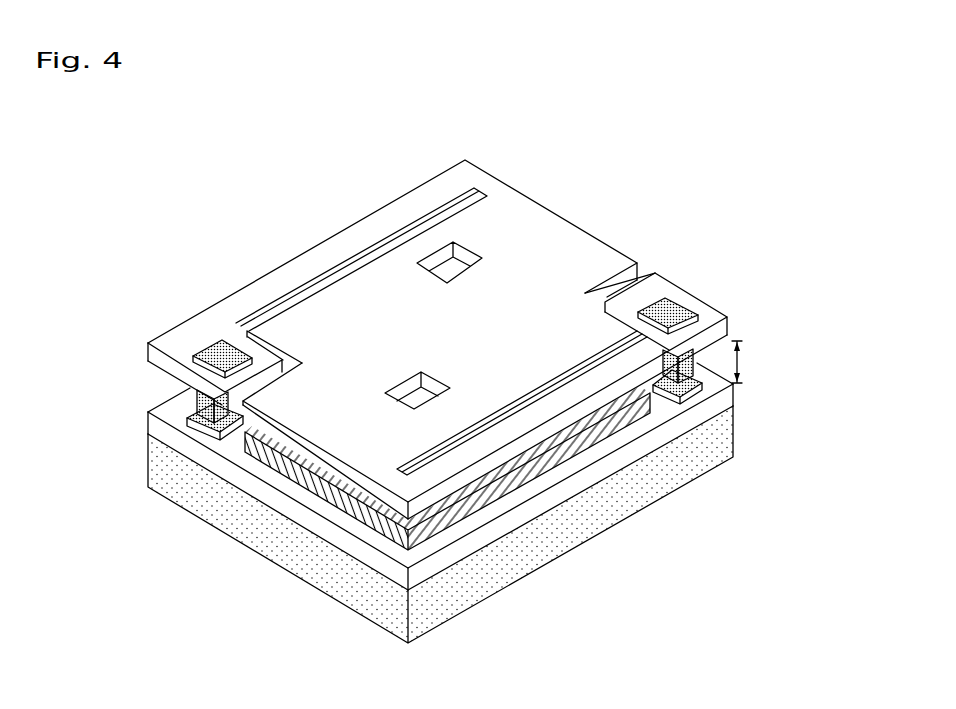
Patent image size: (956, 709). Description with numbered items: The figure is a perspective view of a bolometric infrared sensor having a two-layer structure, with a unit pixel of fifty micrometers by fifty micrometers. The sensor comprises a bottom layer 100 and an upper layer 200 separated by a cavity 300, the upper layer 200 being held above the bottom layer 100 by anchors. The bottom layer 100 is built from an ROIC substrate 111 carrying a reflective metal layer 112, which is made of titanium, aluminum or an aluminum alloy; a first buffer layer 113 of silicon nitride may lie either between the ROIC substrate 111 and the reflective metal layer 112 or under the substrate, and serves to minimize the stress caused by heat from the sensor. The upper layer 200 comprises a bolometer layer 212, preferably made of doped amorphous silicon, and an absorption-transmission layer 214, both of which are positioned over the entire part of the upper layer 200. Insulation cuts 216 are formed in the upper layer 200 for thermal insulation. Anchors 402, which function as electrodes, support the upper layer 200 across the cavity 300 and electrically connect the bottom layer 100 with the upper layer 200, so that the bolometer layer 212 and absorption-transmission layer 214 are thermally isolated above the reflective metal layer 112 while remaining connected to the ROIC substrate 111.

The bottom layer 100 is at (456, 496).
The ROIC substrate 111 is at (574, 520).
The reflective metal layer 112 is at (640, 430).
The first buffer layer 113 is at (722, 400).
The upper layer 200 is at (457, 339).
The bolometer layer 212 is at (730, 328).
The absorption-transmission layer 214 is at (728, 320).
The insulation cut 216 is at (278, 306).
The cavity 300 is at (767, 361).
The anchor 402 is at (663, 298).